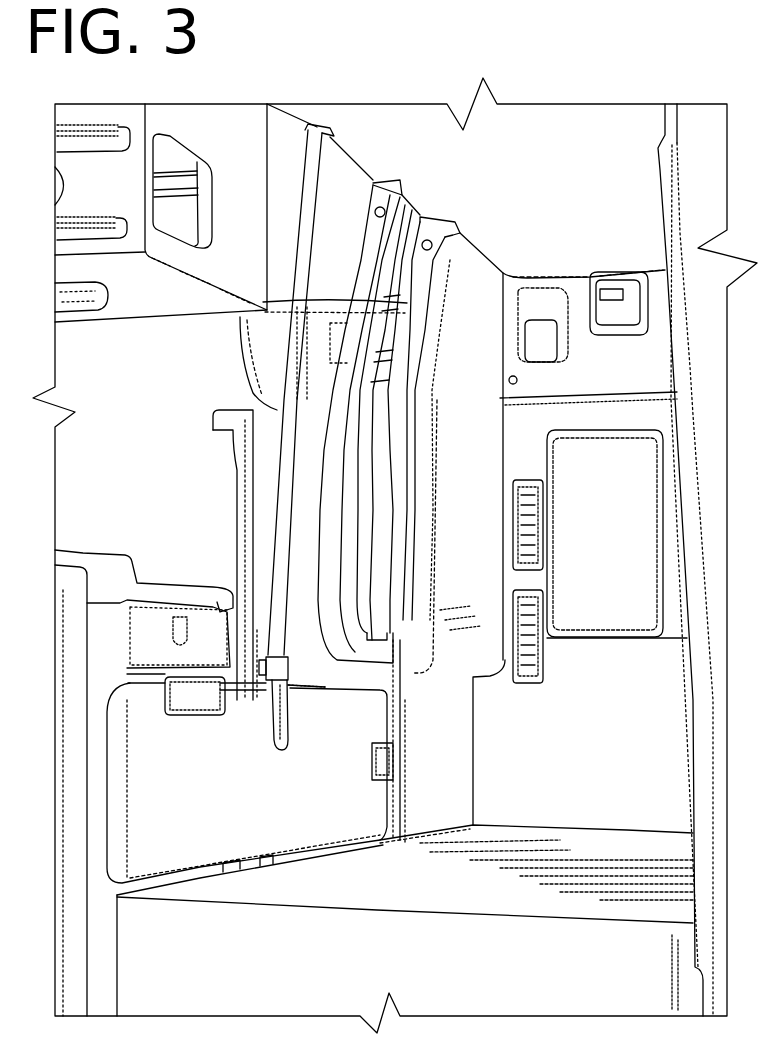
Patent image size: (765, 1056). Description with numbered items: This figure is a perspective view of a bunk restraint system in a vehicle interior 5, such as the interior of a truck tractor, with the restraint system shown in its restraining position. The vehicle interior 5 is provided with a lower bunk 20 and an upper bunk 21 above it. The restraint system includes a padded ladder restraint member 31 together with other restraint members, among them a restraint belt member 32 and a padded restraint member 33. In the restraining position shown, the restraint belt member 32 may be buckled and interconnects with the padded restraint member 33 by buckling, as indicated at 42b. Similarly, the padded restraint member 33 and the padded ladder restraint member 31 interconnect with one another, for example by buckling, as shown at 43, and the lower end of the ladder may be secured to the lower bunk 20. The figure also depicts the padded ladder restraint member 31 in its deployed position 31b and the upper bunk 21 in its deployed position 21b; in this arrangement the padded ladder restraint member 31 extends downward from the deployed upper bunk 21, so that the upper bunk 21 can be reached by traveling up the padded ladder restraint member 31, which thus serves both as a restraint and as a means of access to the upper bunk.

The vehicle interior 5 is at (105, 385).
The lower bunk 20 is at (493, 893).
The upper bunk 21 is at (503, 210).
The deployed position of the upper bunk 21b is at (520, 133).
The padded ladder restraint member 31 is at (338, 452).
The deployed position of the padded ladder restraint member 31b is at (367, 405).
The restraint belt member 32 is at (278, 563).
The padded restraint member 33 is at (163, 768).
The buckle interconnection between restraint belt member and padded restraint member 42b is at (277, 670).
The buckle interconnection between padded restraint member and padded ladder restrai 43 is at (383, 767).